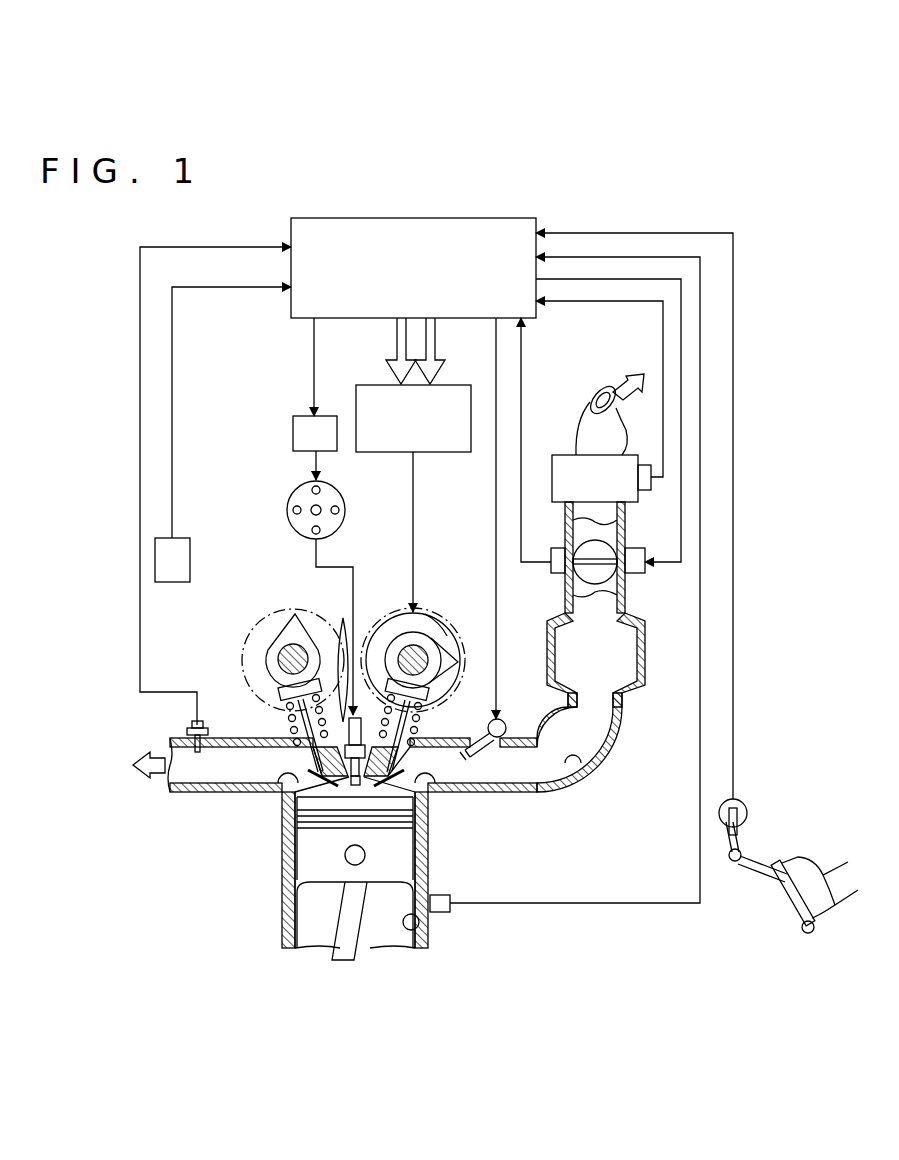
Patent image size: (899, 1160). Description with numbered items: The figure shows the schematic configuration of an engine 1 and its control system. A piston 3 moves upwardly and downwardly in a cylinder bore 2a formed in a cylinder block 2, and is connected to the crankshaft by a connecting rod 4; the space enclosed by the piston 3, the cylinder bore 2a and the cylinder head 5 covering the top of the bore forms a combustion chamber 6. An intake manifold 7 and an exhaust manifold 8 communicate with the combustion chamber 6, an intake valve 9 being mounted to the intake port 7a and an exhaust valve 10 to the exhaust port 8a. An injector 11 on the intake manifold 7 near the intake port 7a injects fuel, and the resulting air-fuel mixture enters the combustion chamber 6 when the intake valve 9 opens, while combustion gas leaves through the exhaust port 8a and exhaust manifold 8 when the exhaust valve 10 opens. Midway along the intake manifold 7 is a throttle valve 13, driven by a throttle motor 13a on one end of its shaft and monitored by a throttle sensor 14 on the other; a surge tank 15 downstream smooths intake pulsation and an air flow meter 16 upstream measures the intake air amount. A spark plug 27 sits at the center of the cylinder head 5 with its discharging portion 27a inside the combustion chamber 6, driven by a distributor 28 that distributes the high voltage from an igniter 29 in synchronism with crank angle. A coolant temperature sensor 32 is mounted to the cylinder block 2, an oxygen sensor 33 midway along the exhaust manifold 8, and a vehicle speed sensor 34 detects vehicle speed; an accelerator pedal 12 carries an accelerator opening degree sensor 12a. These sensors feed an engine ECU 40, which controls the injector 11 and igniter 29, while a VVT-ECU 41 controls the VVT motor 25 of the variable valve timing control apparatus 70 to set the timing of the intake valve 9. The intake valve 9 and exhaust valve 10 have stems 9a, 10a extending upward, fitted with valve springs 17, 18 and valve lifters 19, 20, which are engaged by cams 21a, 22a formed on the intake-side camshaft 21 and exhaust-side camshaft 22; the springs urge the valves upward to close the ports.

The engine 1 is at (282, 850).
The cylinder block 2 is at (428, 937).
The cylinder bore 2a is at (420, 922).
The piston 3 is at (300, 880).
The connecting rod 4 is at (350, 932).
The cylinder head 5 is at (359, 734).
The combustion chamber 6 is at (370, 790).
The intake manifold 7 is at (585, 775).
The intake port 7a is at (430, 792).
The exhaust manifold 8 is at (182, 792).
The exhaust port 8a is at (288, 790).
The intake valve 9 is at (425, 800).
The stem (of intake valve) 9a is at (402, 760).
The exhaust valve 10 is at (310, 808).
The stem (of exhaust valve) 10a is at (310, 762).
The injector 11 is at (479, 718).
The accelerator pedal 12 is at (785, 905).
The accelerator opening degree sensor 12a is at (746, 810).
The throttle valve 13 is at (565, 585).
The throttle motor 13a is at (640, 505).
The throttle sensor 14 is at (551, 550).
The surge tank 15 is at (645, 660).
The air flow meter 16 is at (552, 470).
The valve spring (intake) 17 is at (422, 730).
The valve spring (exhaust) 18 is at (287, 730).
The valve lifter (intake) 19 is at (452, 673).
The valve lifter (exhaust) 20 is at (275, 693).
The camshaft on the intake side 21 is at (427, 616).
The cam (intake) 21a is at (447, 630).
The camshaft on the exhaust side 22 is at (280, 650).
The cam (exhaust) 22a is at (270, 665).
The VVT motor 25 is at (388, 627).
The spark plug 27 is at (343, 618).
The discharging portion 27a is at (352, 790).
The distributor 28 is at (295, 496).
The igniter 29 is at (293, 435).
The coolant temperature sensor 32 is at (450, 895).
The oxygen sensor 33 is at (187, 730).
The vehicle speed sensor 34 is at (190, 552).
The engine ECU 40 is at (536, 215).
The VVT-ECU 41 is at (378, 385).
The variable valve timing control apparatus (VVT) 70 is at (400, 612).